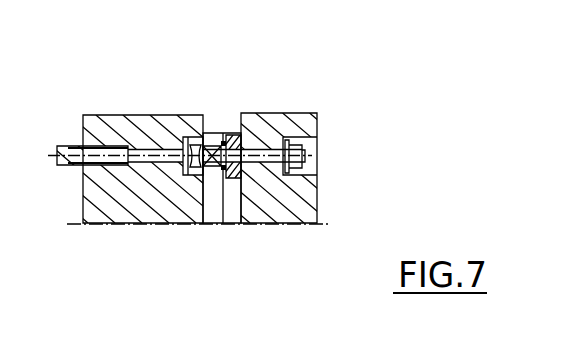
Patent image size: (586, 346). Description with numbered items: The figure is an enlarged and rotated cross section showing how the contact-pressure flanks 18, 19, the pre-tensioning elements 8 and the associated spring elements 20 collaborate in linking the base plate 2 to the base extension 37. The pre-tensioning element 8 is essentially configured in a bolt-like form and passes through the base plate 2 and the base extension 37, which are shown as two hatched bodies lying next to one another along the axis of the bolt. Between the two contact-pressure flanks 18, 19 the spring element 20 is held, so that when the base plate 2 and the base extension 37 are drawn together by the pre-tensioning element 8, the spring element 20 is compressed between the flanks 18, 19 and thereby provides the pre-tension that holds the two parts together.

The base plate 2 is at (273, 225).
The pre-tensioning element 8 is at (147, 135).
The contact-pressure flank 18 is at (229, 135).
The contact-pressure flank 19 is at (222, 145).
The spring element 20 is at (223, 222).
The base extension 37 is at (128, 222).